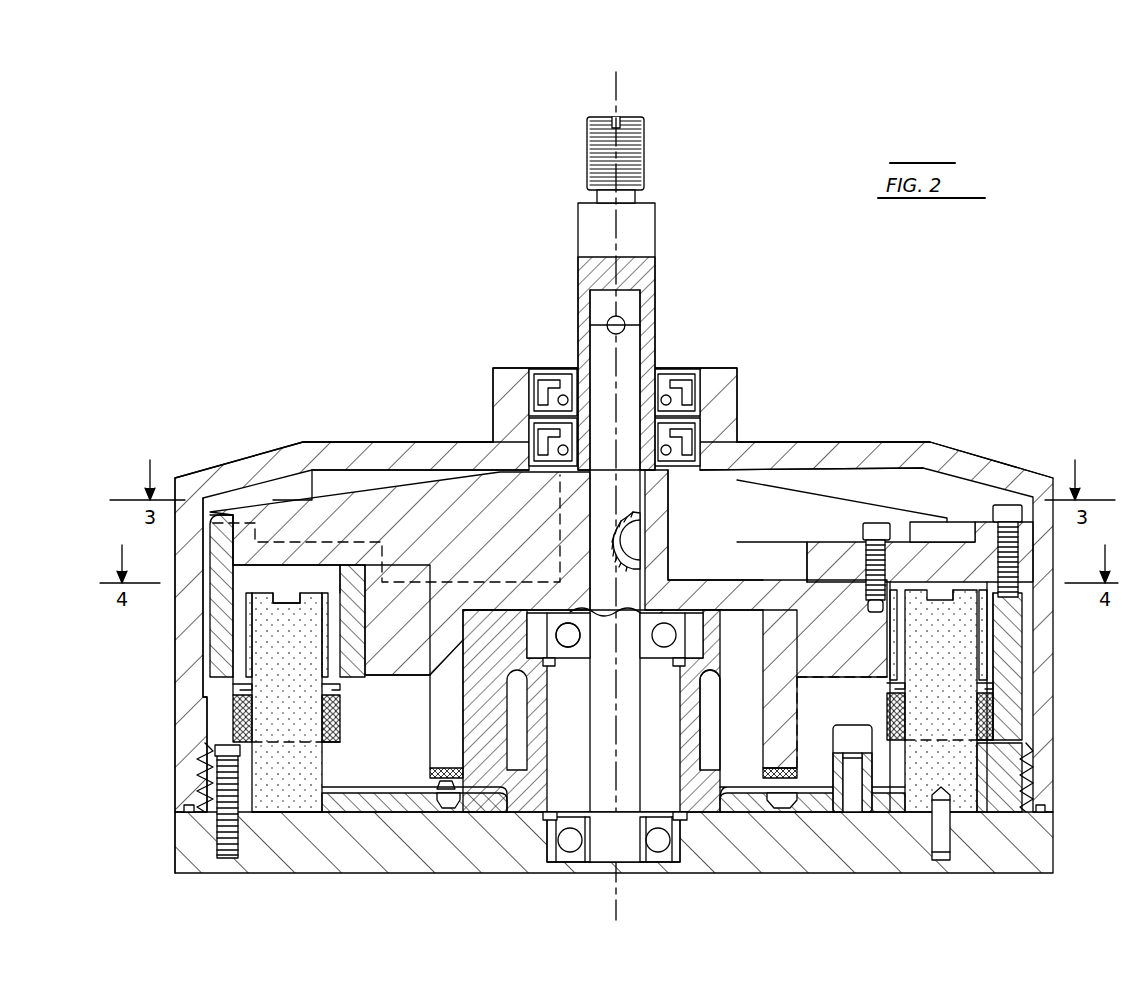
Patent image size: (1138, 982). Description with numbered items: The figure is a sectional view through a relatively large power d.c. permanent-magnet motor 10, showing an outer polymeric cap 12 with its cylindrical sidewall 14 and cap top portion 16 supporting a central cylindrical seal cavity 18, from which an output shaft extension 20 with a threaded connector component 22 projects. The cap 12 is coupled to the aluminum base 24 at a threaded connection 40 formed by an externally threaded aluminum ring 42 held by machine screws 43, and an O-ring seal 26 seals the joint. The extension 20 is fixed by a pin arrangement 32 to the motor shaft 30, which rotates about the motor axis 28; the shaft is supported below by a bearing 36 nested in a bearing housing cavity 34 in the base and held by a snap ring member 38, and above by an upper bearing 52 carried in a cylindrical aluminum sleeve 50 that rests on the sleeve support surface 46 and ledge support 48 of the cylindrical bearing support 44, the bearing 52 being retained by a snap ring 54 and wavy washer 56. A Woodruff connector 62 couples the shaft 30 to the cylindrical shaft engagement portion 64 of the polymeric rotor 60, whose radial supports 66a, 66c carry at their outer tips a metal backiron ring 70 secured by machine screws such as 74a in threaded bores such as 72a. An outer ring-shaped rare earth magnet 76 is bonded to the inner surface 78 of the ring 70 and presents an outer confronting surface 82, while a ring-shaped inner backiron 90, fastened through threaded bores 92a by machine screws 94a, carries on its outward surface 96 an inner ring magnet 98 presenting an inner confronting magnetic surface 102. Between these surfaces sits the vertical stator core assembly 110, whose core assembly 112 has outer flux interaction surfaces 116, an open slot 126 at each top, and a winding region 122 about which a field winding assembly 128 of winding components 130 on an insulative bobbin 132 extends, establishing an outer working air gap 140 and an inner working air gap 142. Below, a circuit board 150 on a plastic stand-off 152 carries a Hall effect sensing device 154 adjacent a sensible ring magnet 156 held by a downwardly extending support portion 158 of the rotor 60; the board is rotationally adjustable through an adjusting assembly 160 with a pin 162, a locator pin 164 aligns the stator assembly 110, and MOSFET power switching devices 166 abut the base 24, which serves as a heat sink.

The d.c. PM motor 10 is at (348, 287).
The outer polymeric cap 12 is at (245, 460).
The cylindrical sidewall 14 is at (200, 680).
The cap top portion 16 is at (330, 442).
The cylindrical seal cavity 18 is at (718, 410).
The output shaft extension 20 is at (655, 275).
The threaded connector component 22 is at (640, 147).
The aluminum base 24 is at (200, 865).
The O-ring seal 26 is at (186, 806).
The motor axis 28 is at (618, 95).
The motor shaft 30 is at (628, 355).
The pin arrangement 32 is at (608, 322).
The bearing housing cavity 34 is at (540, 862).
The bearing 36 is at (625, 870).
The snap ring member 38 is at (685, 860).
The threaded connection 40 is at (205, 775).
The externally threaded aluminum ring 42 is at (227, 812).
The machine screws 43 is at (228, 860).
The bearing support 44 is at (535, 740).
The cylindrical sleeve support surface 46 is at (712, 688).
The ledge support 48 is at (790, 775).
The cylindrical aluminum sleeve 50 is at (690, 635).
The upper bearing 52 is at (556, 640).
The snap ring 54 is at (543, 660).
The wavy washer 56 is at (652, 590).
The rotor 60 is at (820, 485).
The Woodruff connector 62 is at (645, 535).
The cylindrical shaft engagement portion 64 is at (660, 560).
The radial support 66a is at (800, 510).
The radial support 66c is at (440, 490).
The backiron ring 70 is at (215, 615).
The threaded bore 72a is at (1022, 600).
The machine screw 74a is at (1005, 505).
The ring-shaped rare earth magnet 76 is at (235, 640).
The cylindrical inner surface 78 is at (228, 586).
The outer confronting surface 82 is at (268, 596).
The ring-shaped inner backiron 90 is at (366, 618).
The threaded bore 92a is at (870, 590).
The machine screw 94a is at (862, 525).
The outward surface 96 is at (366, 665).
The ring-shaped rare earth magnet 98 is at (890, 642).
The inner confronting magnetic surface 102 is at (893, 612).
The stator core assembly 110 is at (228, 722).
The core assembly 112 is at (285, 812).
The outer flux interaction surface 116 is at (257, 625).
The winding region 122 is at (238, 700).
The open channel or slot 126 is at (288, 596).
The field winding assembly 128 is at (345, 710).
The winding components 130 is at (342, 722).
The bobbin 132 is at (345, 688).
The outer working air gap 140 is at (257, 650).
The inner working air gap 142 is at (320, 660).
The circuit board 150 is at (430, 820).
The plastic stand-off 152 is at (380, 815).
The Hall effect commutational sensing device 154 is at (435, 782).
The ring magnet 156 is at (435, 770).
The support portion 158 is at (450, 715).
The adjusting assembly 160 is at (850, 815).
The pin 162 is at (855, 815).
The locator pin 164 is at (942, 862).
The power switching devices 166 is at (448, 812).